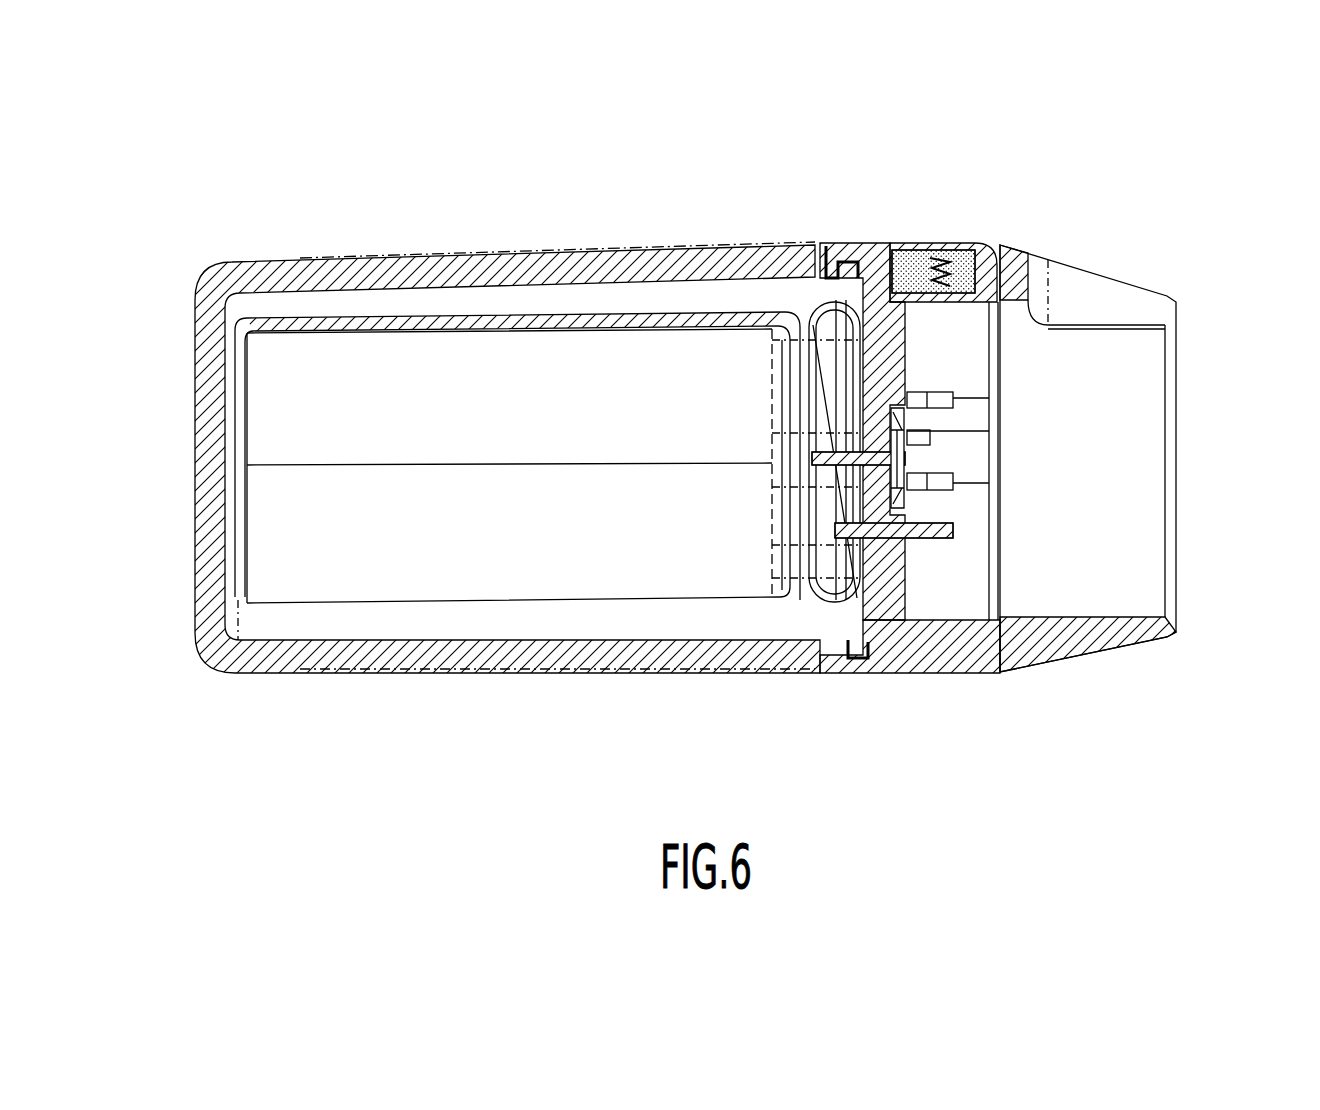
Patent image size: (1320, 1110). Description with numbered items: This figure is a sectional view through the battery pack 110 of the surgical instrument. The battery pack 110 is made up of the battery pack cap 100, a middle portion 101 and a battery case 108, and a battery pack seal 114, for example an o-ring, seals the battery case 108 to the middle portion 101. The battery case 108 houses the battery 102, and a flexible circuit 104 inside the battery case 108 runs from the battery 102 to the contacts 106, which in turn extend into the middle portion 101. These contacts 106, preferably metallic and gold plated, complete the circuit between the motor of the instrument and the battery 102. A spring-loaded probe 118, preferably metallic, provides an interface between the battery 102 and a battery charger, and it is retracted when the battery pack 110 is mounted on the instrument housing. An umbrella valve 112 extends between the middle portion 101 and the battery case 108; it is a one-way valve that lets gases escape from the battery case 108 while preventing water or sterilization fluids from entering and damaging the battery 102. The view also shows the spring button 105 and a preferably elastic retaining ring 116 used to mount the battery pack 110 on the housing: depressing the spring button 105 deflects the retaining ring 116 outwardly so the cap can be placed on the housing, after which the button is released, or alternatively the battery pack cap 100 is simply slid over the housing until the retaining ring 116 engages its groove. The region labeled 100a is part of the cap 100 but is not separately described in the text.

The battery pack cap 100 is at (1095, 640).
The lens window 100a is at (1100, 303).
The middle portion 101 is at (983, 655).
The battery 102 is at (352, 382).
The flexible circuit 104 is at (525, 316).
The spring button 105 is at (902, 272).
The contacts 106 is at (938, 395).
The battery case 108 is at (252, 660).
The battery pack 110 is at (552, 665).
The umbrella valve 112 is at (838, 378).
The battery pack seal 114 is at (853, 652).
The retaining ring 116 is at (990, 244).
The probe 118 is at (880, 533).